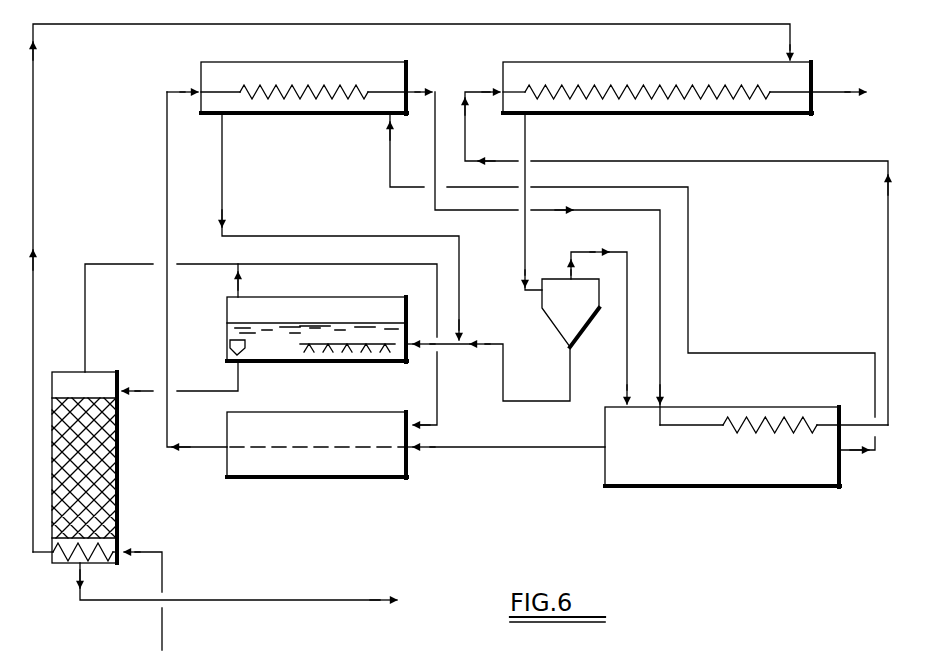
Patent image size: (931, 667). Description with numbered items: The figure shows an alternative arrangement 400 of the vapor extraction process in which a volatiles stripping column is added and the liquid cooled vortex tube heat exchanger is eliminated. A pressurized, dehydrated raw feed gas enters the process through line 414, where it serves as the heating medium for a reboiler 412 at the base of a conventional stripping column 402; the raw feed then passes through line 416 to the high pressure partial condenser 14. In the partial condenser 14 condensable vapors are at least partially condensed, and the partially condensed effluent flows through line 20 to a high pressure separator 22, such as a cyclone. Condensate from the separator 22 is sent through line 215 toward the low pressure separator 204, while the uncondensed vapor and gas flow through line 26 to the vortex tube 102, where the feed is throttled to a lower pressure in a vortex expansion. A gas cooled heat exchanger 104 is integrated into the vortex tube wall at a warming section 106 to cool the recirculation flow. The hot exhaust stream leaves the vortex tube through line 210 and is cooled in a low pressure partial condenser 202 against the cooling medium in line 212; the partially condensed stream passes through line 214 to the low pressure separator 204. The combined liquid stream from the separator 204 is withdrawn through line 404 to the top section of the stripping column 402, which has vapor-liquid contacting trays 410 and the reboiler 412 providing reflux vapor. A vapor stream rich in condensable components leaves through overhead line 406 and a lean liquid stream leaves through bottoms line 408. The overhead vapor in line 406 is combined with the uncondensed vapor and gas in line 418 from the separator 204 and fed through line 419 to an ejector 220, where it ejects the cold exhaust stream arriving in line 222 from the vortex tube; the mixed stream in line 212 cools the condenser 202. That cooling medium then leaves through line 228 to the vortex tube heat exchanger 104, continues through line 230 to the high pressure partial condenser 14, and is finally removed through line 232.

The high pressure feed partial condenser 14 is at (580, 62).
The line 20 is at (530, 245).
The high pressure separator 22 is at (550, 262).
The line 26 is at (622, 342).
The vortex tube 102 is at (688, 490).
The gas cooled vortex tube heat exchanger 104 is at (742, 420).
The warming section 106 is at (785, 453).
The low pressure partial condenser 202 is at (230, 62).
The low pressure separator 204 is at (320, 297).
The line 210 is at (688, 315).
The line 212 is at (167, 163).
The line 214 is at (258, 222).
The line 215 is at (503, 382).
The ejector 220 is at (325, 412).
The line 222 is at (538, 448).
The line 228 is at (660, 263).
The line 230 is at (888, 245).
The line 232 is at (826, 96).
The alternative arrangement of the process 400 is at (826, 533).
The stripping column 402 is at (118, 498).
The line 404 is at (200, 391).
The overhead line 406 is at (85, 345).
The bottoms line 408 is at (298, 600).
The vapor-liquid contacting elements or trays 410 is at (95, 474).
The reboiler 412 is at (110, 540).
The line 414 is at (163, 578).
The line 416 is at (35, 80).
The line 418 is at (238, 283).
The line 419 is at (320, 264).